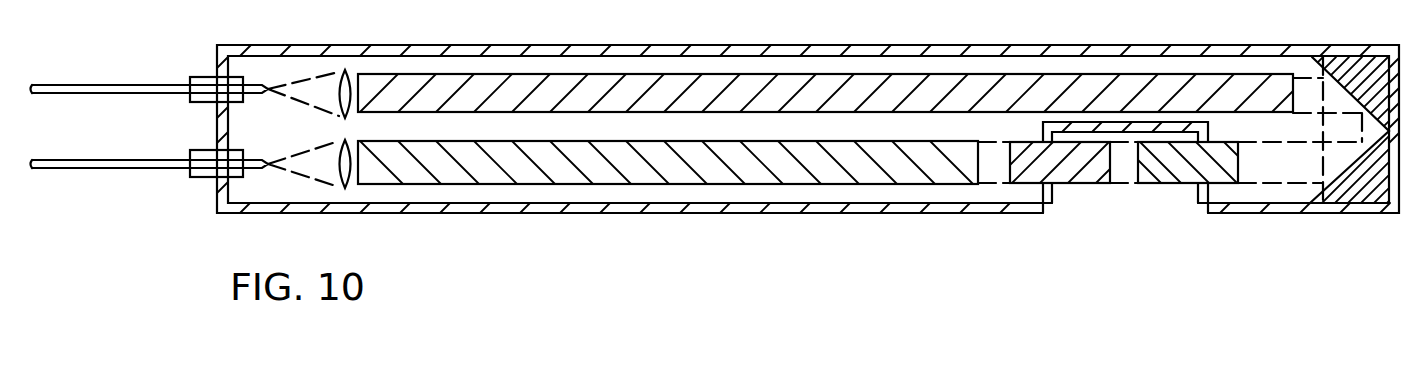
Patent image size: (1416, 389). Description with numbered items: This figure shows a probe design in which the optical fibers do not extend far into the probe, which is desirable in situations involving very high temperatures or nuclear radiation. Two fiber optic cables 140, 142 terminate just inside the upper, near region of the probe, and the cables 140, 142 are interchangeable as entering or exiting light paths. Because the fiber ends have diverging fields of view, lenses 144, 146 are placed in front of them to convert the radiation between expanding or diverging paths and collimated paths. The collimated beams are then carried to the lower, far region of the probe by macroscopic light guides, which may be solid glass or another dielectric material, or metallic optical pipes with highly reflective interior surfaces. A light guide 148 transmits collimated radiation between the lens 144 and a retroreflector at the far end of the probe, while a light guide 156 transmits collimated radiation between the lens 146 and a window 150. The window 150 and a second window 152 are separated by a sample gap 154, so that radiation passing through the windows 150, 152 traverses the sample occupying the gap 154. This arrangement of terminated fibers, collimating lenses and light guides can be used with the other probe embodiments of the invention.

The fiber optic cable 140 is at (194, 80).
The fiber optic cable 142 is at (215, 168).
The lens 144 is at (348, 80).
The lens 146 is at (348, 180).
The light guide 148 is at (752, 92).
The light guide 156 is at (700, 167).
The window 150 is at (1092, 172).
The sample gap 154 is at (1122, 185).
The window 152 is at (1185, 173).